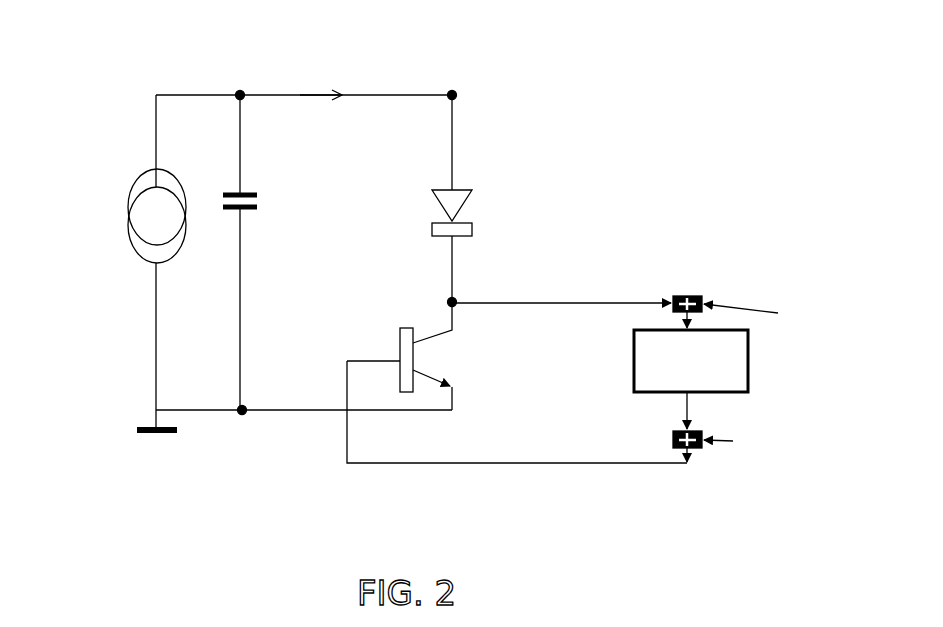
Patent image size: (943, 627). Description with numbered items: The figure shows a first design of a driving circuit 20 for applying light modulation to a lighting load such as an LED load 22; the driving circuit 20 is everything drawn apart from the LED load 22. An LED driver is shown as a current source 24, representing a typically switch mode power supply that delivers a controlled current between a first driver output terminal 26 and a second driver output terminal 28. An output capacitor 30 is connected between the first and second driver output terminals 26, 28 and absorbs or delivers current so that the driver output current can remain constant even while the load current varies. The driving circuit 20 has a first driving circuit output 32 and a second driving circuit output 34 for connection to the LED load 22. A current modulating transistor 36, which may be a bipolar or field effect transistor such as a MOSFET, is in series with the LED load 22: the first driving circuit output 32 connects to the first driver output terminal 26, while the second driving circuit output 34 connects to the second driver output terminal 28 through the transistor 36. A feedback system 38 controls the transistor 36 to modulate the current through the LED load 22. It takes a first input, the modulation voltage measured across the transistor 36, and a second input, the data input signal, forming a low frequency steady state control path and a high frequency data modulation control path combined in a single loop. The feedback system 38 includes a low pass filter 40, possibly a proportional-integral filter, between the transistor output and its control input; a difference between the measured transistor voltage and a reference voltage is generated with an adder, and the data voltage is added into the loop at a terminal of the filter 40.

The driving circuit 20 is at (628, 165).
The LED load 22 is at (466, 192).
The current source 24 is at (128, 232).
The first driver output terminal 26 is at (240, 95).
The second driver output terminal 28 is at (242, 410).
The output capacitor 30 is at (257, 195).
The first driving circuit output 32 is at (452, 95).
The second driving circuit output 34 is at (452, 301).
The current modulating transistor 36 is at (415, 362).
The feedback system 38 is at (491, 493).
The filter 40 is at (634, 362).